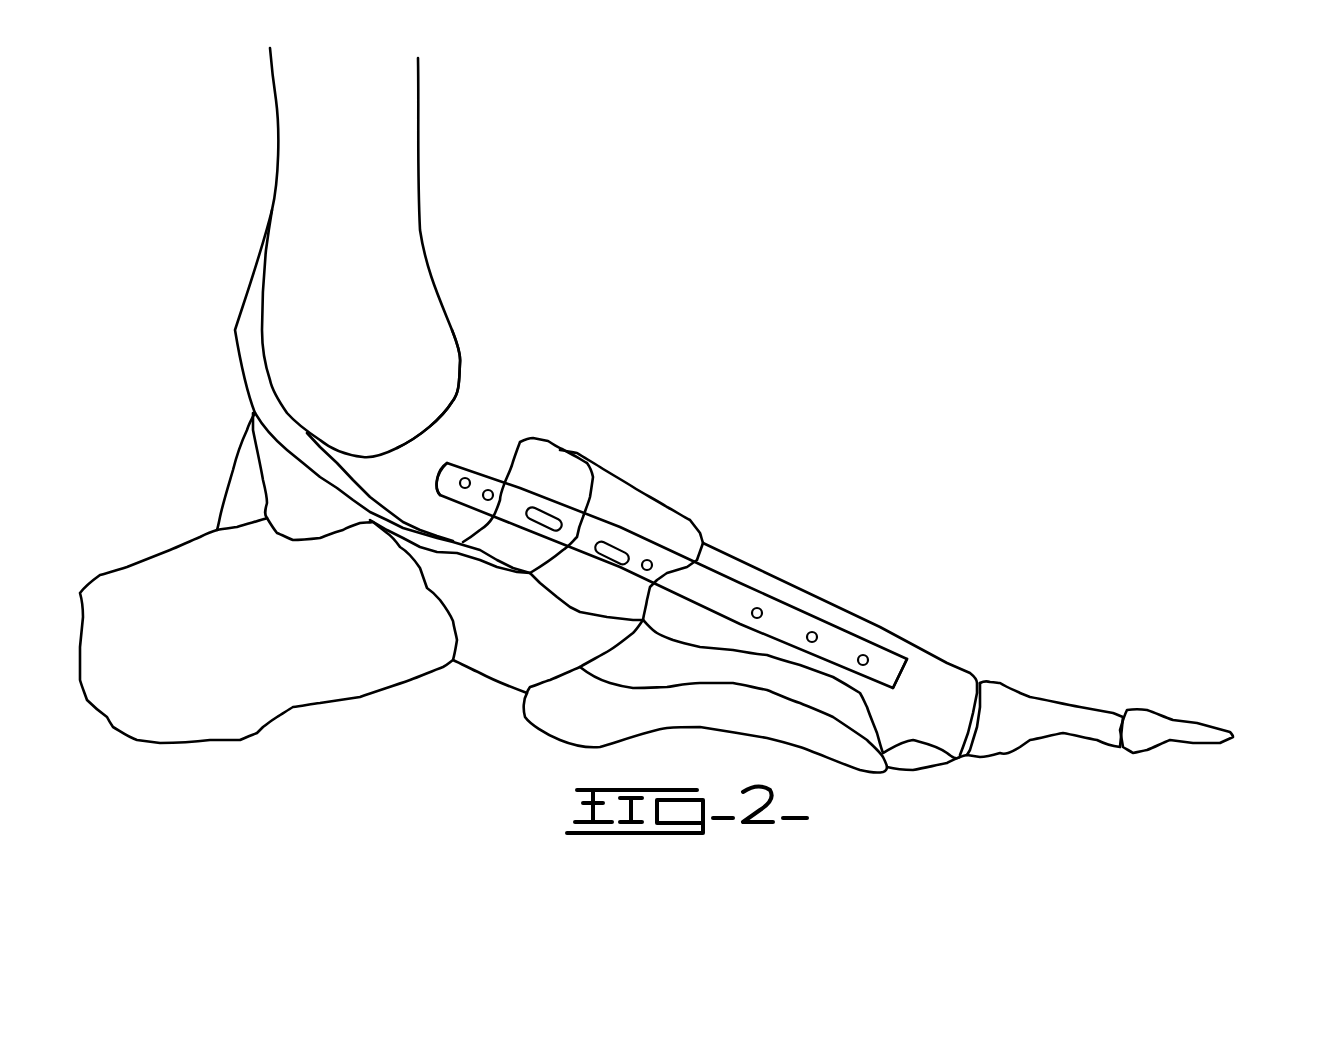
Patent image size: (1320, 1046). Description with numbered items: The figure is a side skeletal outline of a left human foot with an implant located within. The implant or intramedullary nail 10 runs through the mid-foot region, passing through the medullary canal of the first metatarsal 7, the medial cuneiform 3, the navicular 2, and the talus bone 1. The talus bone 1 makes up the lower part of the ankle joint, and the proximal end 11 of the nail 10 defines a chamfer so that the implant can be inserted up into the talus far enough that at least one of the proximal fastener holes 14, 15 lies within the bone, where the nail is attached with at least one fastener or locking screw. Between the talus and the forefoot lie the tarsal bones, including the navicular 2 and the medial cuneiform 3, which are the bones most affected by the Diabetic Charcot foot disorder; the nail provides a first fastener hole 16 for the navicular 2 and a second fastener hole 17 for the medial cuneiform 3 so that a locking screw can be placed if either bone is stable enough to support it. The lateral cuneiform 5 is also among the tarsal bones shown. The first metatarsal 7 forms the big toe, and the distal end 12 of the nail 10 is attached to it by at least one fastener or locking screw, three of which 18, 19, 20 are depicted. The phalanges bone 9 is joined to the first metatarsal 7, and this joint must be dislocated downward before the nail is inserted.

The talus bone 1 is at (433, 450).
The navicular 2 is at (538, 470).
The medial cuneiform 3 is at (607, 505).
The lateral cuneiform 5 is at (1013, 713).
The first metatarsal 7 is at (943, 688).
The phalanges bone 9 is at (1141, 713).
The implant or intramedullary nail 10 is at (706, 590).
The proximal end 11 is at (446, 480).
The distal end 12 is at (905, 648).
The proximal fastener hole 14 is at (466, 478).
The proximal fastener hole 15 is at (490, 490).
The first fastener hole 16 is at (545, 518).
The second fastener hole 17 is at (618, 550).
The fastener 18 is at (760, 608).
The fastener 19 is at (815, 632).
The fastener 20 is at (866, 655).